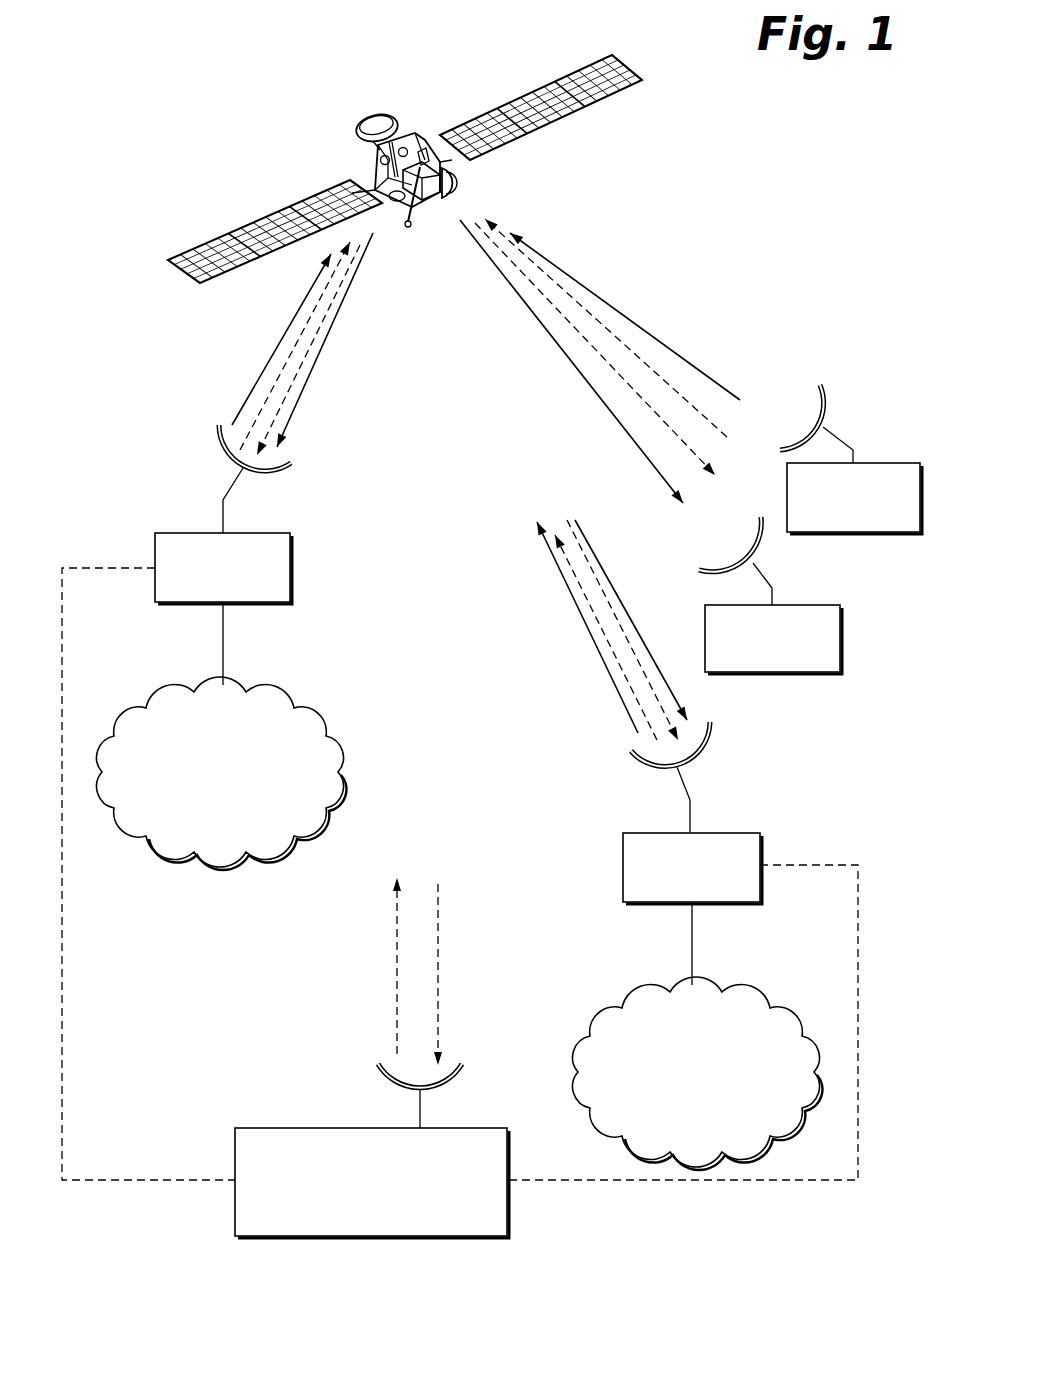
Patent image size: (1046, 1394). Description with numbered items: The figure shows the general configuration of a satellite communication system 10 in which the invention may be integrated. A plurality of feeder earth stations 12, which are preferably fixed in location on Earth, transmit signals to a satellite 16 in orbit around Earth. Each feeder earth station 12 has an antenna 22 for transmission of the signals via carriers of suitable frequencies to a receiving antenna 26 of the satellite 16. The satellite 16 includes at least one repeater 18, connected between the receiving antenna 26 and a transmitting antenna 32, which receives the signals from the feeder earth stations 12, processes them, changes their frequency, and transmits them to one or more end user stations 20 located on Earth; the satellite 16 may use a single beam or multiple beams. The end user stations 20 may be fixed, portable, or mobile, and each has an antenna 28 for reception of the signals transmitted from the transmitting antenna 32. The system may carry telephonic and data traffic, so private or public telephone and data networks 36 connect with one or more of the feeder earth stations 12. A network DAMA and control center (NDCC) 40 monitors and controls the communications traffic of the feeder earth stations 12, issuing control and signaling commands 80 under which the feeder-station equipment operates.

The satellite communication system 10 is at (702, 295).
The feeder earth station 12 is at (292, 552).
The satellite 16 is at (405, 158).
The repeater 18 is at (423, 160).
The end user station 20 is at (847, 533).
The antenna 22 is at (297, 467).
The receiving antenna 26 is at (357, 125).
The antenna 28 is at (827, 388).
The transmitting antenna 32 is at (470, 187).
The private or public telephone and data network 36 is at (305, 705).
The network DAMA and control center (NDCC) 40 is at (307, 1128).
The commands 80 is at (430, 980).